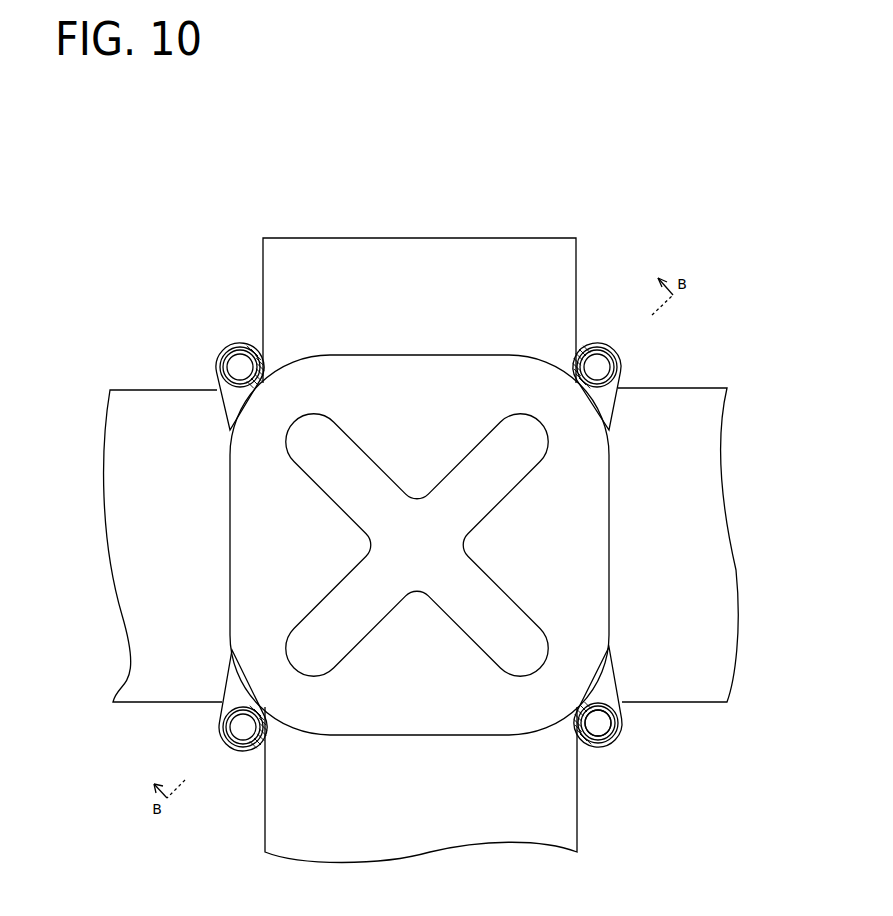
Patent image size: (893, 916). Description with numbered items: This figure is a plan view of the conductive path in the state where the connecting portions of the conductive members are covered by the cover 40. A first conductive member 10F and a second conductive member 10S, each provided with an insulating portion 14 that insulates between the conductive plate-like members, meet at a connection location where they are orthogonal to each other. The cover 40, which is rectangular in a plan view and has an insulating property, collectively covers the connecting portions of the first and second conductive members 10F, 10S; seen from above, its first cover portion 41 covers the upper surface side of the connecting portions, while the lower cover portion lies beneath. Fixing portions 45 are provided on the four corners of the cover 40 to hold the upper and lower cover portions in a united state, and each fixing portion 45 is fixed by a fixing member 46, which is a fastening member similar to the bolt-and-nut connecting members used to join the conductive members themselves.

The first conductive member 10F is at (476, 247).
The second conductive member 10S is at (173, 400).
The insulating portion 14 is at (421, 513).
The cover 40 is at (417, 475).
The first cover portion 41 is at (368, 390).
The fixing portion 45 is at (217, 380).
The fixing member 46 is at (598, 727).